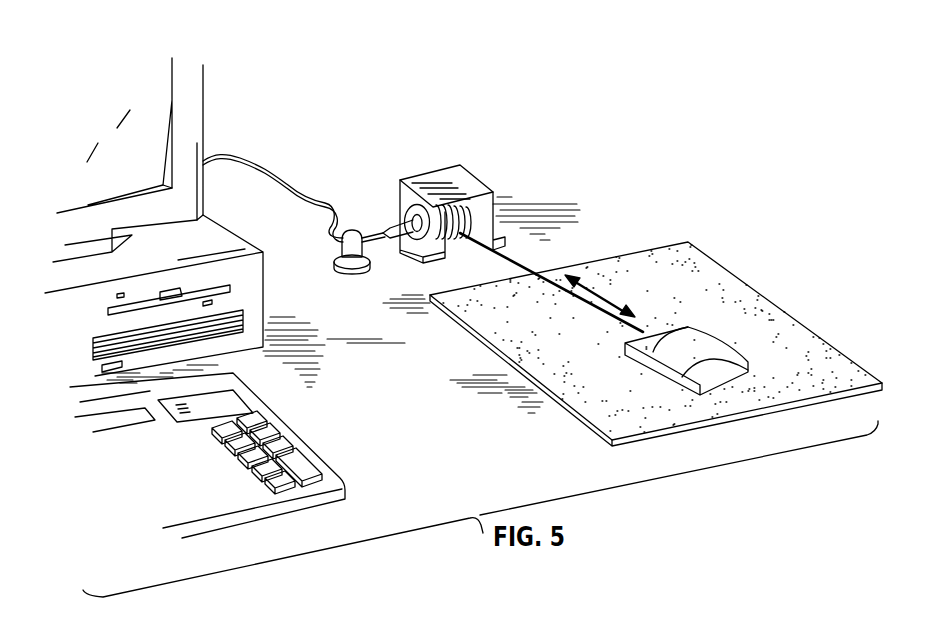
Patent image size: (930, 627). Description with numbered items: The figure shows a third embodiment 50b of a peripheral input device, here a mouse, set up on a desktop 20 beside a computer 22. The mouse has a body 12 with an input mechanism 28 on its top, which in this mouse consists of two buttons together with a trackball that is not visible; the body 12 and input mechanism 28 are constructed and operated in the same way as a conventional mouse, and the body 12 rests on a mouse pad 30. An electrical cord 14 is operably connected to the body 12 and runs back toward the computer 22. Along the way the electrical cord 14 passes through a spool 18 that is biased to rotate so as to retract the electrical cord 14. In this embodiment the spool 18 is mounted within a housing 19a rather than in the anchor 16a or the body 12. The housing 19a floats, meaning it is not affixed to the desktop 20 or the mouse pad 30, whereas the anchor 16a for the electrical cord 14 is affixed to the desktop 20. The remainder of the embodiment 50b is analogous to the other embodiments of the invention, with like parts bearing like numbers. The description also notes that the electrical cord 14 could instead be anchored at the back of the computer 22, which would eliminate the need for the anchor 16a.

The body 12 is at (702, 346).
The electrical cord 14 is at (237, 157).
The anchor 16a is at (350, 232).
The spool 18 is at (458, 204).
The housing 19a is at (422, 174).
The desktop 20 is at (395, 411).
The computer 22 is at (255, 267).
The input mechanism 28 is at (650, 338).
The mouse pad 30 is at (690, 243).
The third embodiment 50b is at (575, 173).